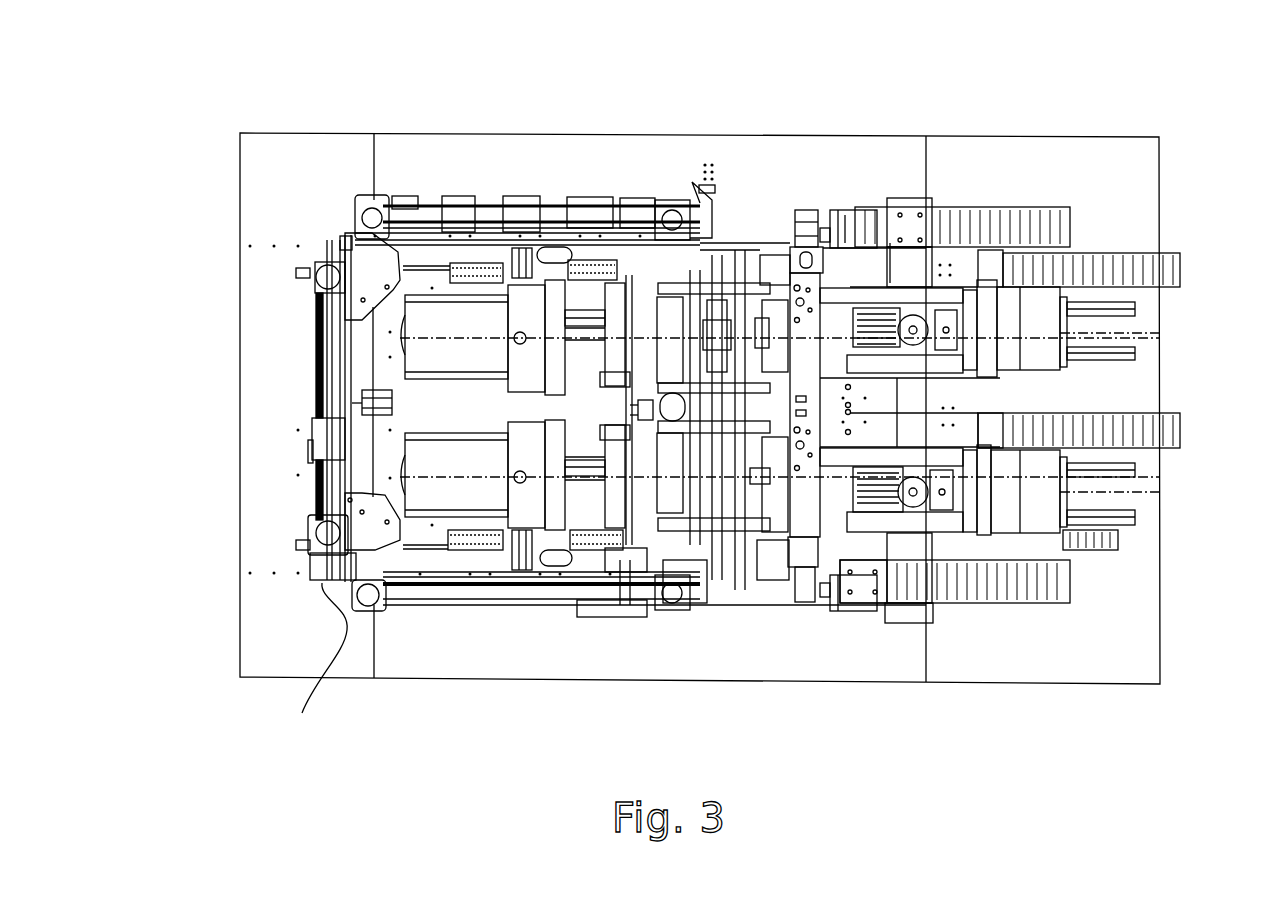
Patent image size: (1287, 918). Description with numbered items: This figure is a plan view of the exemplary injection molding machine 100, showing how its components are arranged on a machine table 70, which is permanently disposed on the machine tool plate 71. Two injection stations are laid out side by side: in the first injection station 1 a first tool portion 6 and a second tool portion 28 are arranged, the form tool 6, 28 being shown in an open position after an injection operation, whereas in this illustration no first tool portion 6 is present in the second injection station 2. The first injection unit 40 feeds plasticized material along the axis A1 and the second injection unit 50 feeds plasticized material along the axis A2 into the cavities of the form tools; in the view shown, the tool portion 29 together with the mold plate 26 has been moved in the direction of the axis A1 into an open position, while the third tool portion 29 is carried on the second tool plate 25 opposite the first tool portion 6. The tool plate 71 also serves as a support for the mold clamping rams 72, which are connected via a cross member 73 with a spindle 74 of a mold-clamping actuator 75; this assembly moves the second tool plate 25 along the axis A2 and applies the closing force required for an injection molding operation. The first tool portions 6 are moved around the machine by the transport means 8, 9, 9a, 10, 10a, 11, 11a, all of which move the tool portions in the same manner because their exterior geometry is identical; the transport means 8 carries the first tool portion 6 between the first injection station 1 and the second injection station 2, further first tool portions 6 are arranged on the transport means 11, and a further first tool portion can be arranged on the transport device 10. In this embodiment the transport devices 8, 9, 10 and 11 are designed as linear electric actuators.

The injection molding machine 100 is at (1020, 76).
The machine table 70 is at (1147, 170).
The first injection station 1 is at (770, 230).
The second injection station 2 is at (770, 585).
The first tool portion 6 is at (533, 206).
The transport means 8 is at (737, 490).
The transport means 9 is at (445, 605).
The transport means 9a is at (312, 670).
The transport device 10 is at (337, 373).
The transport means 10a is at (347, 247).
The transport means 11 is at (490, 220).
The transport means 11a is at (700, 182).
The second tool plate 25 is at (830, 590).
The first tool plate 26 is at (843, 240).
The second tool portion 28 is at (752, 360).
The third tool portion 29 is at (755, 485).
The first injection unit 40 is at (1192, 312).
The second injection unit 50 is at (1192, 463).
The machine tool plate 71 is at (673, 200).
The mold clamping rams 72 is at (642, 300).
The cross member 73 is at (608, 375).
The spindle 74 is at (575, 345).
The mold-clamping actuator 75 is at (490, 357).
The axis A1 is at (1130, 340).
The axis A2 is at (1160, 508).